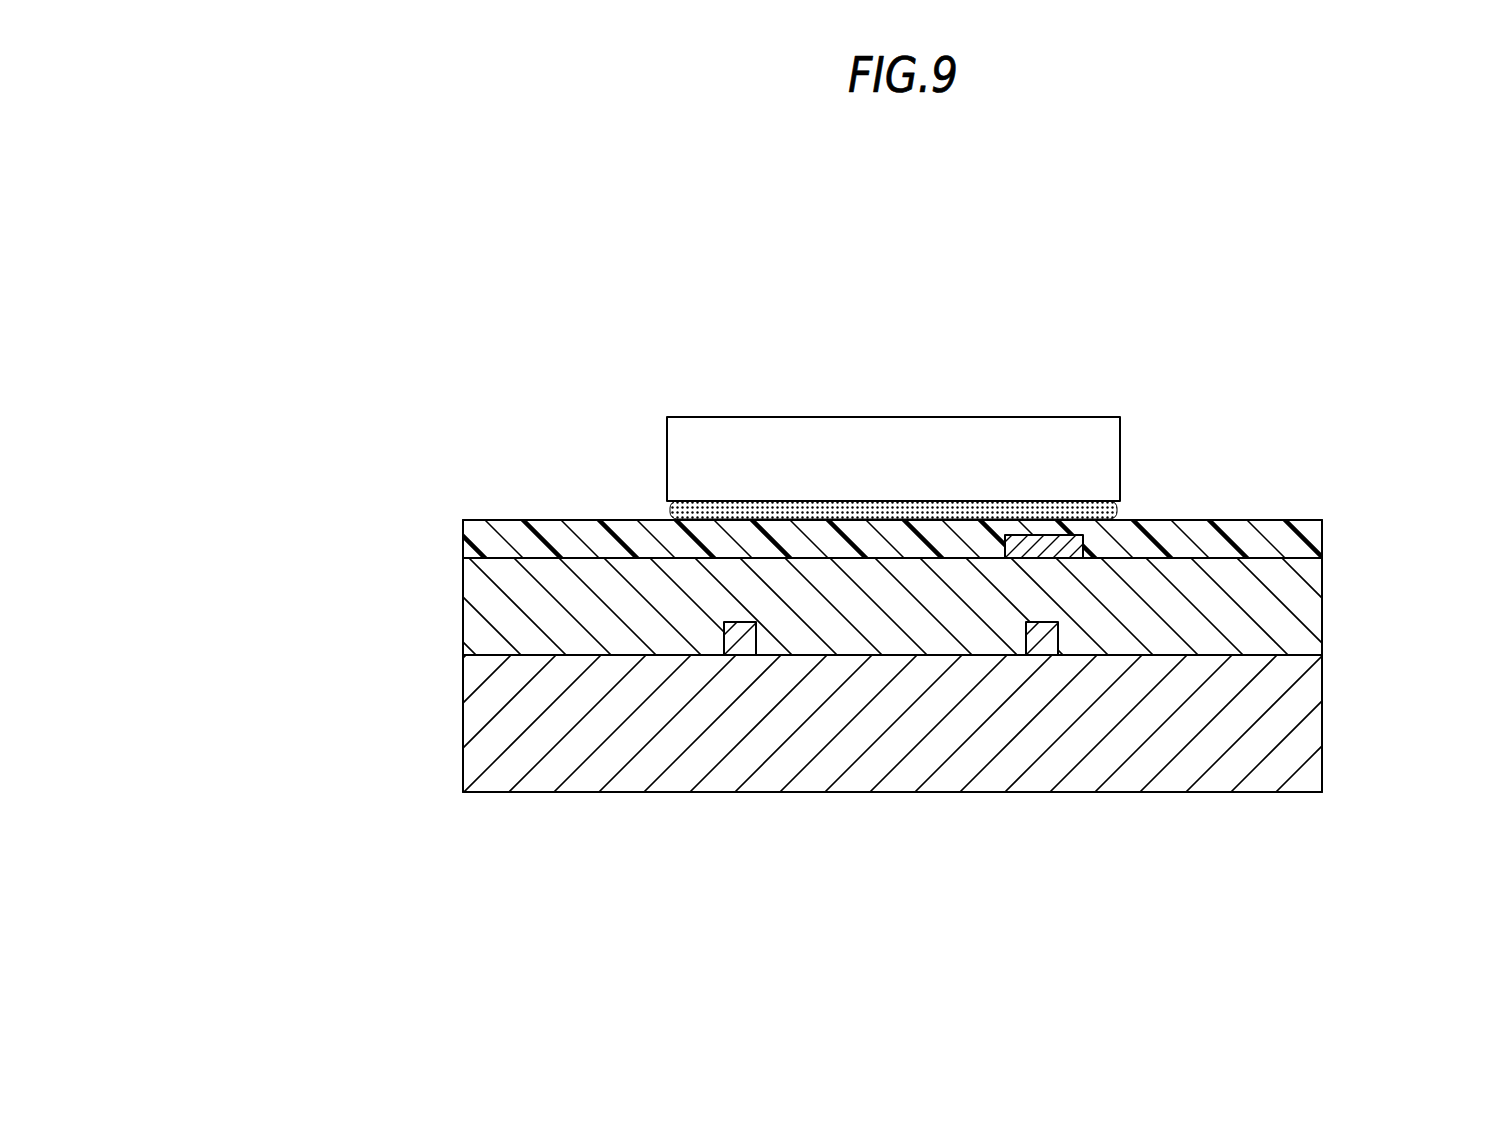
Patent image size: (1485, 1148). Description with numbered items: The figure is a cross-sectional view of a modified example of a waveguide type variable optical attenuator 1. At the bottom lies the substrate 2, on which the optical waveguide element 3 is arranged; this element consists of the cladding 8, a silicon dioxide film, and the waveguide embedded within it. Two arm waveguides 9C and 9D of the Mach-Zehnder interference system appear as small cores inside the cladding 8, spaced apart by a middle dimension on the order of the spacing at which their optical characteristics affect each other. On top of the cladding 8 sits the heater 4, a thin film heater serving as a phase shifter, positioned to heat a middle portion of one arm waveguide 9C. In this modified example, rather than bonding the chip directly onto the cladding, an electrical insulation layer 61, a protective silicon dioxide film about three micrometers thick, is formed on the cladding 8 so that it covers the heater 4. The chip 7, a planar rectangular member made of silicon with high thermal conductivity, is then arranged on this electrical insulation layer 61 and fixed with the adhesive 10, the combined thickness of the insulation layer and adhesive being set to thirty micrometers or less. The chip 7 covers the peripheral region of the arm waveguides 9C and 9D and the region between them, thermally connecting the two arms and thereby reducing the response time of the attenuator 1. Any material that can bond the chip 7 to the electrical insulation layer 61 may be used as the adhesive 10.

The waveguide type variable optical attenuator 1 is at (987, 338).
The substrate 2 is at (520, 765).
The optical waveguide element 3 is at (453, 518).
The heater 4 is at (1072, 540).
The chip 7 is at (1038, 448).
The cladding 8 is at (1202, 585).
The arm waveguide 9C is at (1046, 650).
The arm waveguide 9D is at (742, 648).
The adhesive 10 is at (703, 500).
The electrical insulation layer 61 is at (610, 547).